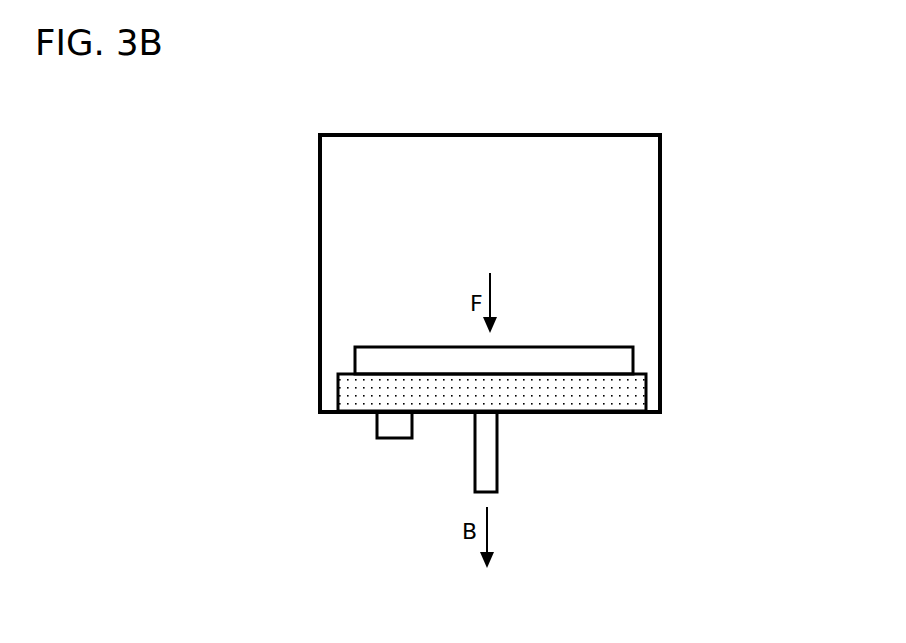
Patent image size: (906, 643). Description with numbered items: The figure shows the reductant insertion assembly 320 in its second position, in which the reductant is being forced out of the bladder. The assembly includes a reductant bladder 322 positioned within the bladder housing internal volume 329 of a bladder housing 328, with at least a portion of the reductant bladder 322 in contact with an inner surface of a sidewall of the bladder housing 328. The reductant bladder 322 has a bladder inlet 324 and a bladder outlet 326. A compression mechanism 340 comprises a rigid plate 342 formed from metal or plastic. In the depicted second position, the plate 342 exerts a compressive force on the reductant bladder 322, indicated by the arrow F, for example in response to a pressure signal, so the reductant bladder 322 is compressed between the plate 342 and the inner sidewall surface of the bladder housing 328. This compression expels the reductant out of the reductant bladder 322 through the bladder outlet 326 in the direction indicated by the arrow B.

The reductant insertion assembly 320 is at (647, 122).
The bladder housing 328 is at (662, 206).
The bladder housing internal volume 329 is at (641, 300).
The reductant bladder 322 is at (639, 395).
The plate 342 is at (371, 359).
The bladder inlet 324 is at (378, 426).
The bladder outlet 326 is at (487, 455).
The compression mechanism 340 is at (521, 328).